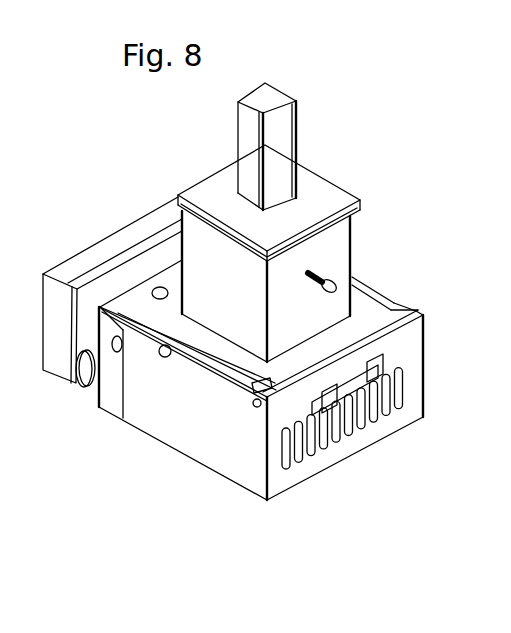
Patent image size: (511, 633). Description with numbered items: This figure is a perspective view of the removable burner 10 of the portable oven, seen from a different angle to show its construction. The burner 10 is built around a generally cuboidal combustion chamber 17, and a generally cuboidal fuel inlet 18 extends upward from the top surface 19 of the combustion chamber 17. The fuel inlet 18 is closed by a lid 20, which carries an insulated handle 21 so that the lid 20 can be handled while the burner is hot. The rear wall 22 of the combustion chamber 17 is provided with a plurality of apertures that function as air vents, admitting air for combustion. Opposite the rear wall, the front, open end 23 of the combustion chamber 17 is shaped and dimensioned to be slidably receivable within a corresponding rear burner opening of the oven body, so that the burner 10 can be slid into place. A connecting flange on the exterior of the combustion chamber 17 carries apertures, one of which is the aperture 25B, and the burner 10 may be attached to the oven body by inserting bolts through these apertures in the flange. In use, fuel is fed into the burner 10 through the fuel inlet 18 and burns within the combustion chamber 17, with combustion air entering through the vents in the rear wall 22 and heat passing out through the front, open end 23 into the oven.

The removable burner 10 is at (209, 515).
The combustion chamber 17 is at (192, 405).
The fuel inlet 18 is at (353, 235).
The top surface 19 is at (365, 322).
The lid 20 is at (322, 177).
The insulated handle 21 is at (290, 97).
The rear wall 22 is at (277, 420).
The front, open end 23 is at (359, 440).
The aperture 25B is at (80, 381).